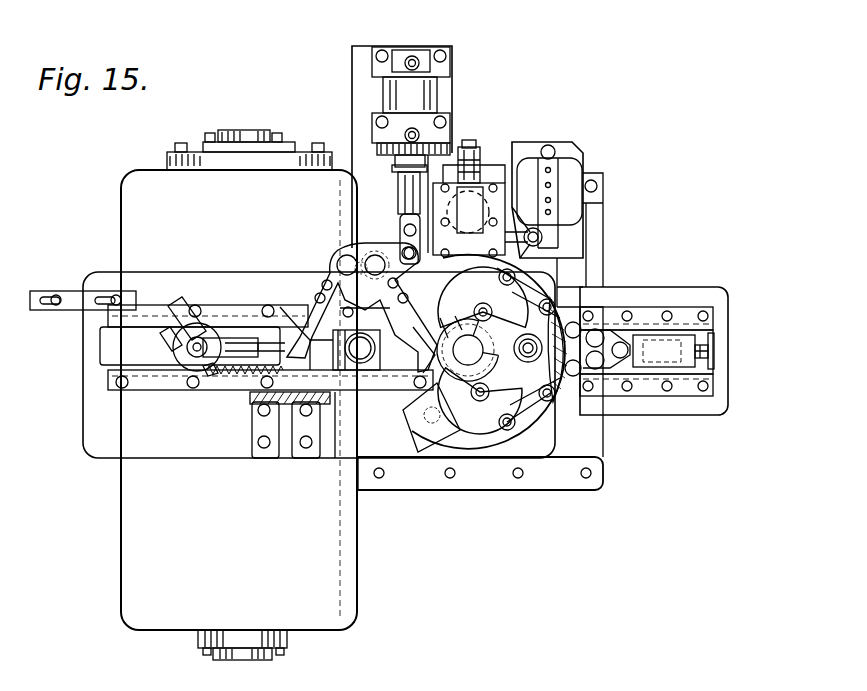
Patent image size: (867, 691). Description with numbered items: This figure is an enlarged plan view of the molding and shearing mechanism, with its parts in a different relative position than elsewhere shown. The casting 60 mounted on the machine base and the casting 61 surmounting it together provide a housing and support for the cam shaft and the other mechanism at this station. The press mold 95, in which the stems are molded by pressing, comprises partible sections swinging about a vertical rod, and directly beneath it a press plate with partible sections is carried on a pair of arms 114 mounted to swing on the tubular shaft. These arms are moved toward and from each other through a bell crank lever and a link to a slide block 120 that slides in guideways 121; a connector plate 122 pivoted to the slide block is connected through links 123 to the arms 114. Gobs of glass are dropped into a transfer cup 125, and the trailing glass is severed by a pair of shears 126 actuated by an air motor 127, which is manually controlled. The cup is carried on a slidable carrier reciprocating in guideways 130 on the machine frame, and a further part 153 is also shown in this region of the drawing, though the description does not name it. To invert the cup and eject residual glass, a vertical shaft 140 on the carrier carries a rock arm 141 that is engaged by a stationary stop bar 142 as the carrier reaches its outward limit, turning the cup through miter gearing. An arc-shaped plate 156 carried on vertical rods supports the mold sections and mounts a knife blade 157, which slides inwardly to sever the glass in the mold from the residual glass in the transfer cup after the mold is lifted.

The casting 60 is at (505, 480).
The casting 61 is at (330, 556).
The press mold 95 is at (478, 302).
The arms 114 is at (455, 428).
The slide block 120 is at (692, 360).
The guideways 121 is at (685, 318).
The connector plate 122 is at (620, 370).
The links 123 is at (590, 385).
The transfer cup 125 is at (370, 370).
The shears 126 is at (385, 305).
The air motor 127 is at (432, 101).
The guideways 130 is at (160, 374).
The vertical shaft 140 is at (190, 349).
The rock arm 141 is at (180, 308).
The stop bar 142 is at (136, 298).
The roller 153 is at (371, 350).
The plate 156 is at (488, 190).
The knife blade 157 is at (462, 345).